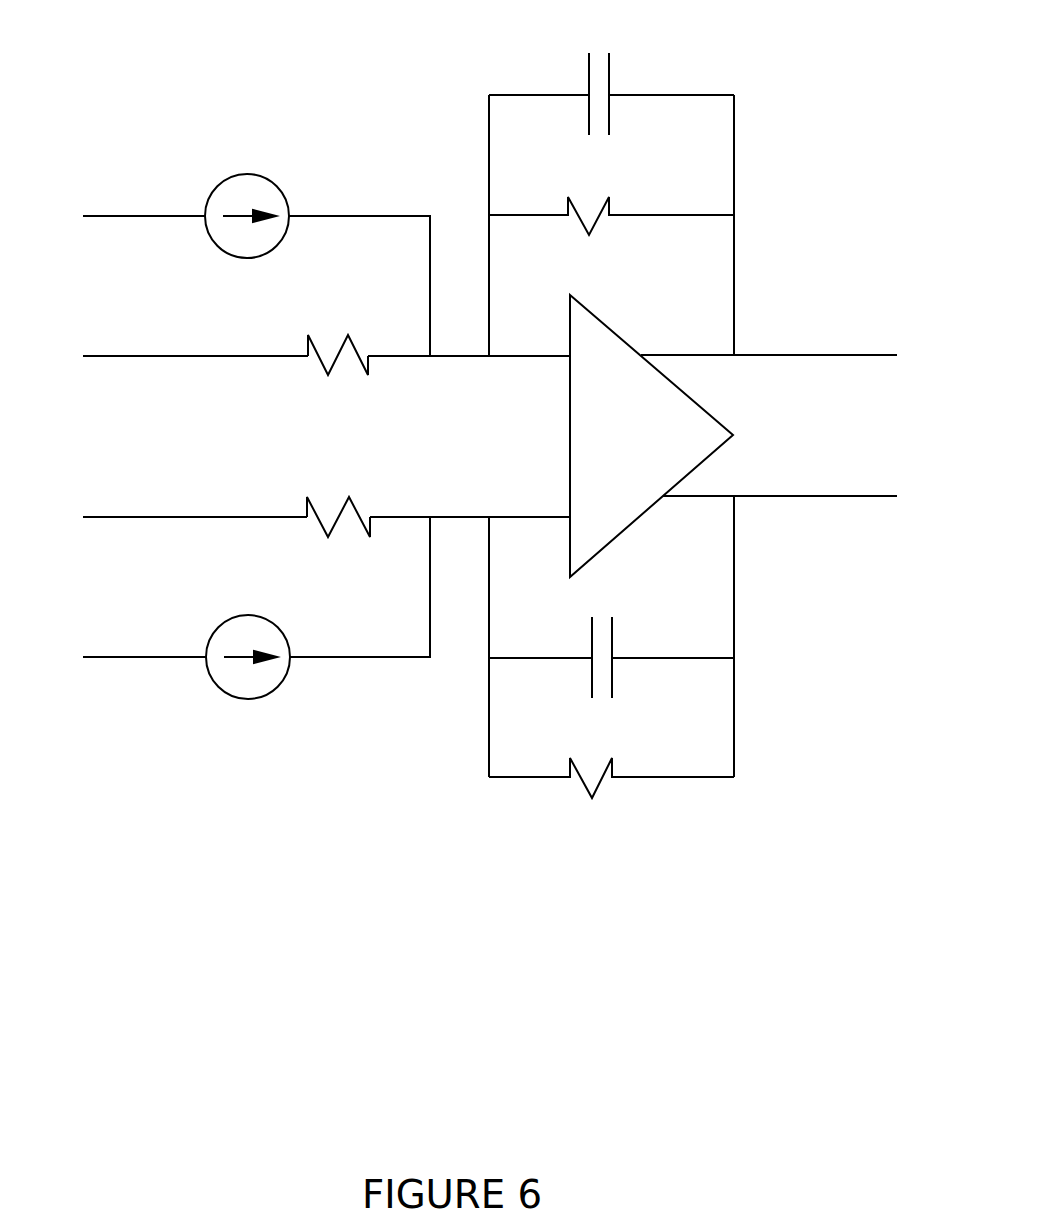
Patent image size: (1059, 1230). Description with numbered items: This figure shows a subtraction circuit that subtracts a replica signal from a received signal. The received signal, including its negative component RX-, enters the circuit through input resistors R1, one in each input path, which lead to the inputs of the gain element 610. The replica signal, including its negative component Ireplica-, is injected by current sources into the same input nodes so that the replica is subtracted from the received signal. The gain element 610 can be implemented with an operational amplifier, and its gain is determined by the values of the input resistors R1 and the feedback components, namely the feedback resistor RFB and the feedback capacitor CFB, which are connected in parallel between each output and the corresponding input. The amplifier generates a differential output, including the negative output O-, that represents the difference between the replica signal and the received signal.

The gain element 610 is at (651, 436).
The input resistor R1 is at (338, 413).
The feedback capacitor CFB is at (611, 350).
The feedback resistor RFB is at (611, 480).
The replica signal Ireplica- is at (256, 249).
The received signal RX- is at (296, 495).
The differential output O- is at (780, 477).